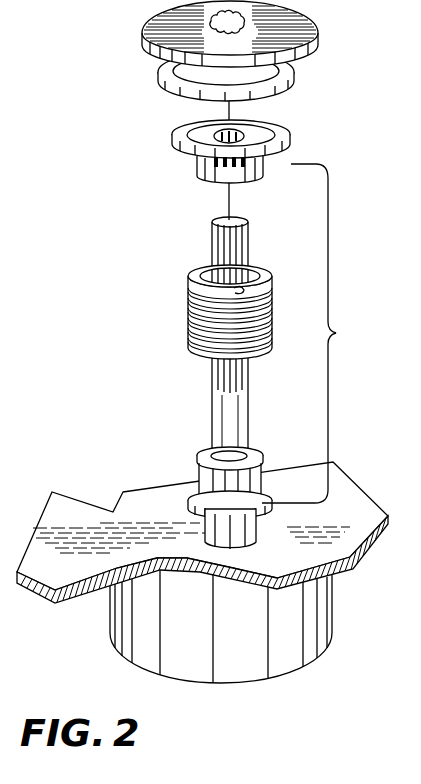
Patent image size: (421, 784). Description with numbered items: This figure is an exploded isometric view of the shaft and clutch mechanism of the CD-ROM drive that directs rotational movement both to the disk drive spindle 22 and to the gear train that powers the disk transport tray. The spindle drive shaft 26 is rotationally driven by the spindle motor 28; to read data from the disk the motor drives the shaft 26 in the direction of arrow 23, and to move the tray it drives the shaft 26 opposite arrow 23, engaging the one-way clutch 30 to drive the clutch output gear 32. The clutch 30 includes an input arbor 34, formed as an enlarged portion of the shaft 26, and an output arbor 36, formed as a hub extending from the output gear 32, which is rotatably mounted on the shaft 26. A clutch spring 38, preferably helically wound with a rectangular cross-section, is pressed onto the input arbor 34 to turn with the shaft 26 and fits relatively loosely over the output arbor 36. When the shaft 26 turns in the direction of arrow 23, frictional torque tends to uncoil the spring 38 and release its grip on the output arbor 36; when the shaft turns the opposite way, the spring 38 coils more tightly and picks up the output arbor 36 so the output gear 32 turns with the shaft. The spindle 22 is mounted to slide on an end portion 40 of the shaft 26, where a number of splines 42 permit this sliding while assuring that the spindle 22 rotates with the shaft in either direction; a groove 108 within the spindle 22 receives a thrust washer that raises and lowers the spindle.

The disk drive spindle 22 is at (142, 33).
The groove 108 is at (158, 78).
The clutch output gear 32 is at (173, 148).
The output arbor 36 is at (197, 170).
The end portion 40 is at (212, 251).
The splines 42 is at (203, 268).
The clutch spring 38 is at (190, 320).
The spindle drive shaft 26 is at (204, 412).
The input arbor 34 is at (196, 472).
The one-way clutch 30 is at (324, 333).
The arrow 23 is at (367, 441).
The spindle motor 28 is at (333, 602).